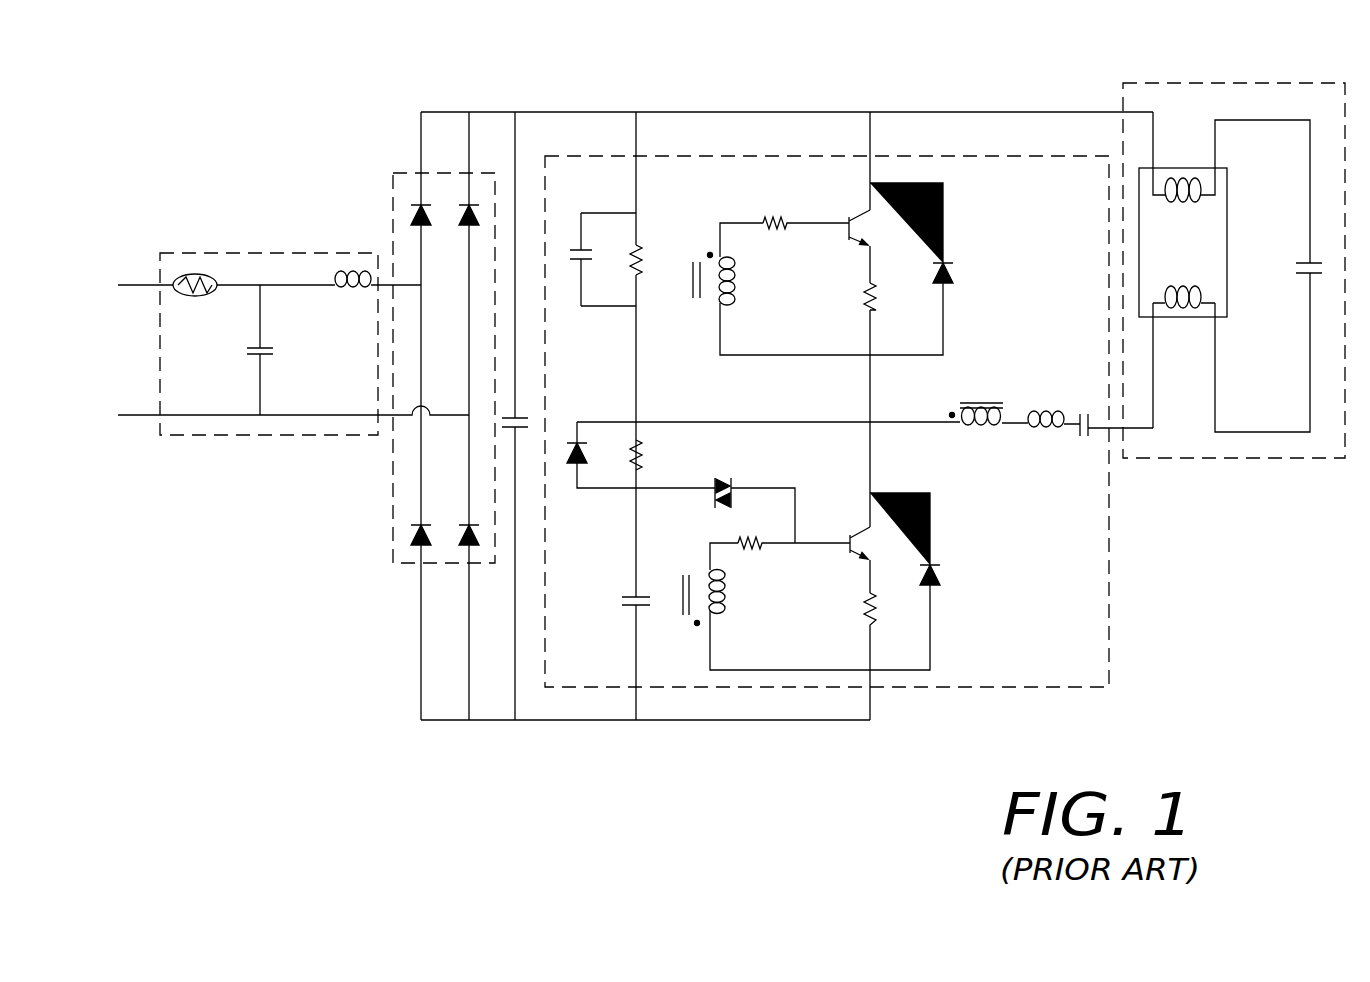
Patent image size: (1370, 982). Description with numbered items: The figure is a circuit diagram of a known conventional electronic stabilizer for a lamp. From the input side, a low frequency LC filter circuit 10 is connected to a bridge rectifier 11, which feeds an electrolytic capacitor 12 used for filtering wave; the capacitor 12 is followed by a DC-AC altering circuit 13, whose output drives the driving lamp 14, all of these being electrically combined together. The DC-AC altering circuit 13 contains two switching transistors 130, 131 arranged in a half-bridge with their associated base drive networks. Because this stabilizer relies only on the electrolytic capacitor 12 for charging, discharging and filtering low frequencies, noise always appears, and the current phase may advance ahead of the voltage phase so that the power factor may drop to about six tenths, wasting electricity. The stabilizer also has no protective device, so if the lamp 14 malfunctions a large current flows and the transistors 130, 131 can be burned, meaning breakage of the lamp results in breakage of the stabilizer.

The low frequency LC filter circuit 10 is at (271, 252).
The bridge rectifier 11 is at (414, 172).
The electrolytic capacitor 12 is at (517, 112).
The DC-AC altering circuit 13 is at (849, 380).
The driving lamp 14 is at (1236, 83).
The transistor 130 is at (875, 223).
The transistor 131 is at (898, 530).